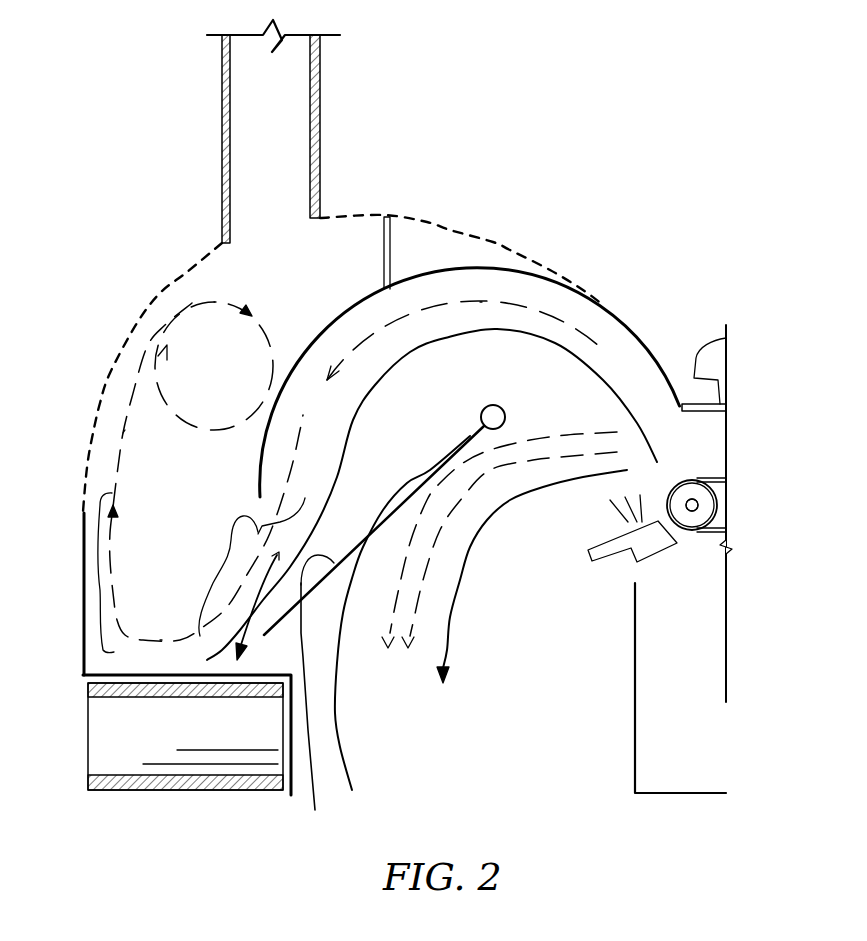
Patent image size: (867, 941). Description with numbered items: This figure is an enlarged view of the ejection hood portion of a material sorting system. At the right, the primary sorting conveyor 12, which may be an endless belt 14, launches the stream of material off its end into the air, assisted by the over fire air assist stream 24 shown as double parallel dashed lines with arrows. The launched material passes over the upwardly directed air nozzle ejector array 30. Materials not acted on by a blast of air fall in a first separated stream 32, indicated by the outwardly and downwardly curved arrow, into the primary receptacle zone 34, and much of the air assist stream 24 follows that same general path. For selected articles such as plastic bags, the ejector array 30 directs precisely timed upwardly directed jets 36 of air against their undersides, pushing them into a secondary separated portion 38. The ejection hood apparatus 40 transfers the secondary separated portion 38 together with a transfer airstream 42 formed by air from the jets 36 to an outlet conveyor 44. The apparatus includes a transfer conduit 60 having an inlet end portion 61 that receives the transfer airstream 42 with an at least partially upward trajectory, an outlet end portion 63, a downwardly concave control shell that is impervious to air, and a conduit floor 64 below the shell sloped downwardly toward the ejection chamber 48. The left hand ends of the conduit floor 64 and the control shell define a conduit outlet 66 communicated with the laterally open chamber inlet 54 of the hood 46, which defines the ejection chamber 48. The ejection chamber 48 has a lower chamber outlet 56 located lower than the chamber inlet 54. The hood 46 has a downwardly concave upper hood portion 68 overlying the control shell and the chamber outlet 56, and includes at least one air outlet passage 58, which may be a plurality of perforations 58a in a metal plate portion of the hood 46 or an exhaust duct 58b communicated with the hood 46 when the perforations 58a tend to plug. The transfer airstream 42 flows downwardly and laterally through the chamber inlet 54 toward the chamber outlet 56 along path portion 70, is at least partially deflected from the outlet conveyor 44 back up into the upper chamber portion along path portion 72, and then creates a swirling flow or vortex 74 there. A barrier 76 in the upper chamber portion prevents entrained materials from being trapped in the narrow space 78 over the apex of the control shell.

The primary sorting conveyor 12 is at (697, 478).
The endless belt 14 is at (692, 505).
The over fire air assist stream 24 is at (393, 612).
The air nozzle ejector array 30 is at (645, 540).
The first separated stream 32 is at (447, 648).
The primary receptacle zone 34 is at (461, 758).
The upwardly directed jets of air 36 is at (620, 502).
The secondary separated portion 38 is at (603, 380).
The ejection hood apparatus 40 is at (137, 228).
The transfer airstream 42 is at (497, 304).
The outlet conveyor 44 is at (157, 680).
The hood 46 is at (127, 343).
The ejection chamber 48 is at (244, 385).
The chamber inlet 54 is at (277, 561).
The lower chamber outlet 56 is at (135, 677).
The air outlet passage 58 is at (312, 60).
The perforations 58a is at (140, 316).
The exhaust duct 58b is at (461, 260).
The transfer conduit 60 is at (410, 277).
The inlet end portion 61 is at (718, 357).
The outlet end portion 63 is at (273, 472).
The conduit floor 64 is at (380, 639).
The conduit outlet 66 is at (419, 501).
The upper hood portion 68 is at (124, 431).
The path portion 70 is at (223, 567).
The path portion 72 is at (97, 567).
The swirling flow 74 is at (203, 298).
The barrier 76 is at (383, 248).
The narrow space 78 is at (460, 249).